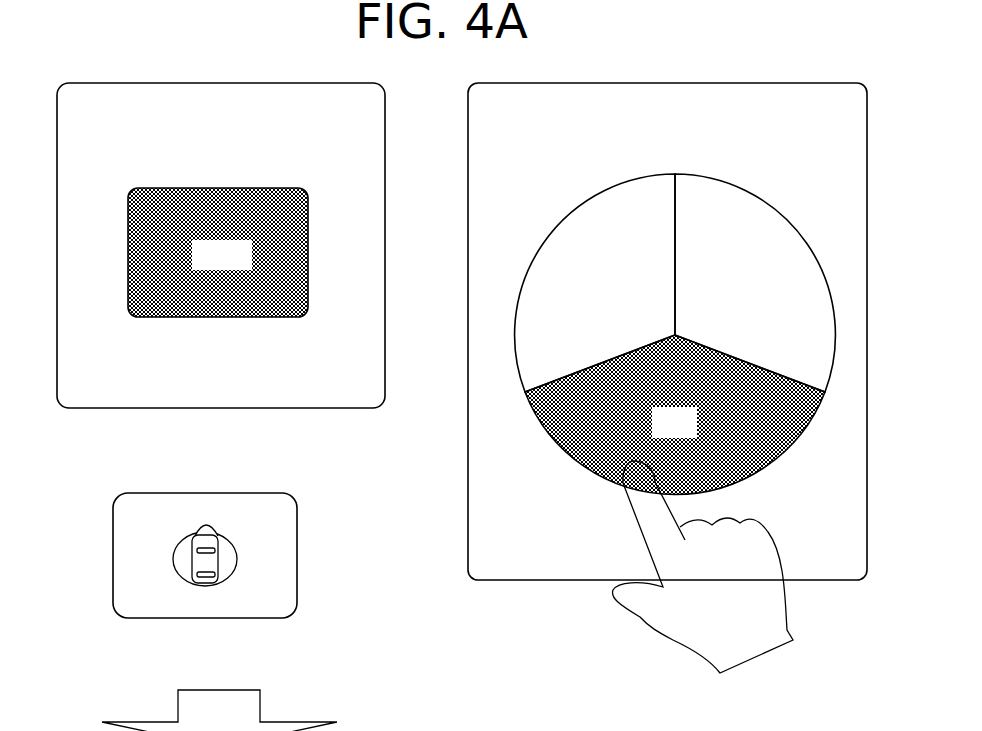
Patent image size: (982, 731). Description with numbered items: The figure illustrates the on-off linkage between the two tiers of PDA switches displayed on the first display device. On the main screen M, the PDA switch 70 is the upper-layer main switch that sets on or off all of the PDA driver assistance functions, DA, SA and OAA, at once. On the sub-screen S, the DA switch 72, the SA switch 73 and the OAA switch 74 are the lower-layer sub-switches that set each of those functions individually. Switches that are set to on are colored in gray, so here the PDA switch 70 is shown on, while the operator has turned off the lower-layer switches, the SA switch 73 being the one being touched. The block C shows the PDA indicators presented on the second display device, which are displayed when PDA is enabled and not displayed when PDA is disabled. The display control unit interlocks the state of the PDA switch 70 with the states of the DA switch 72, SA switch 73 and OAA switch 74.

The main screen M is at (240, 84).
The PDA switch 70 is at (195, 188).
The sub-screen S is at (690, 84).
The DA switch 72 is at (552, 233).
The SA switch 73 is at (758, 476).
The OAA switch 74 is at (786, 218).
The block C is at (182, 493).